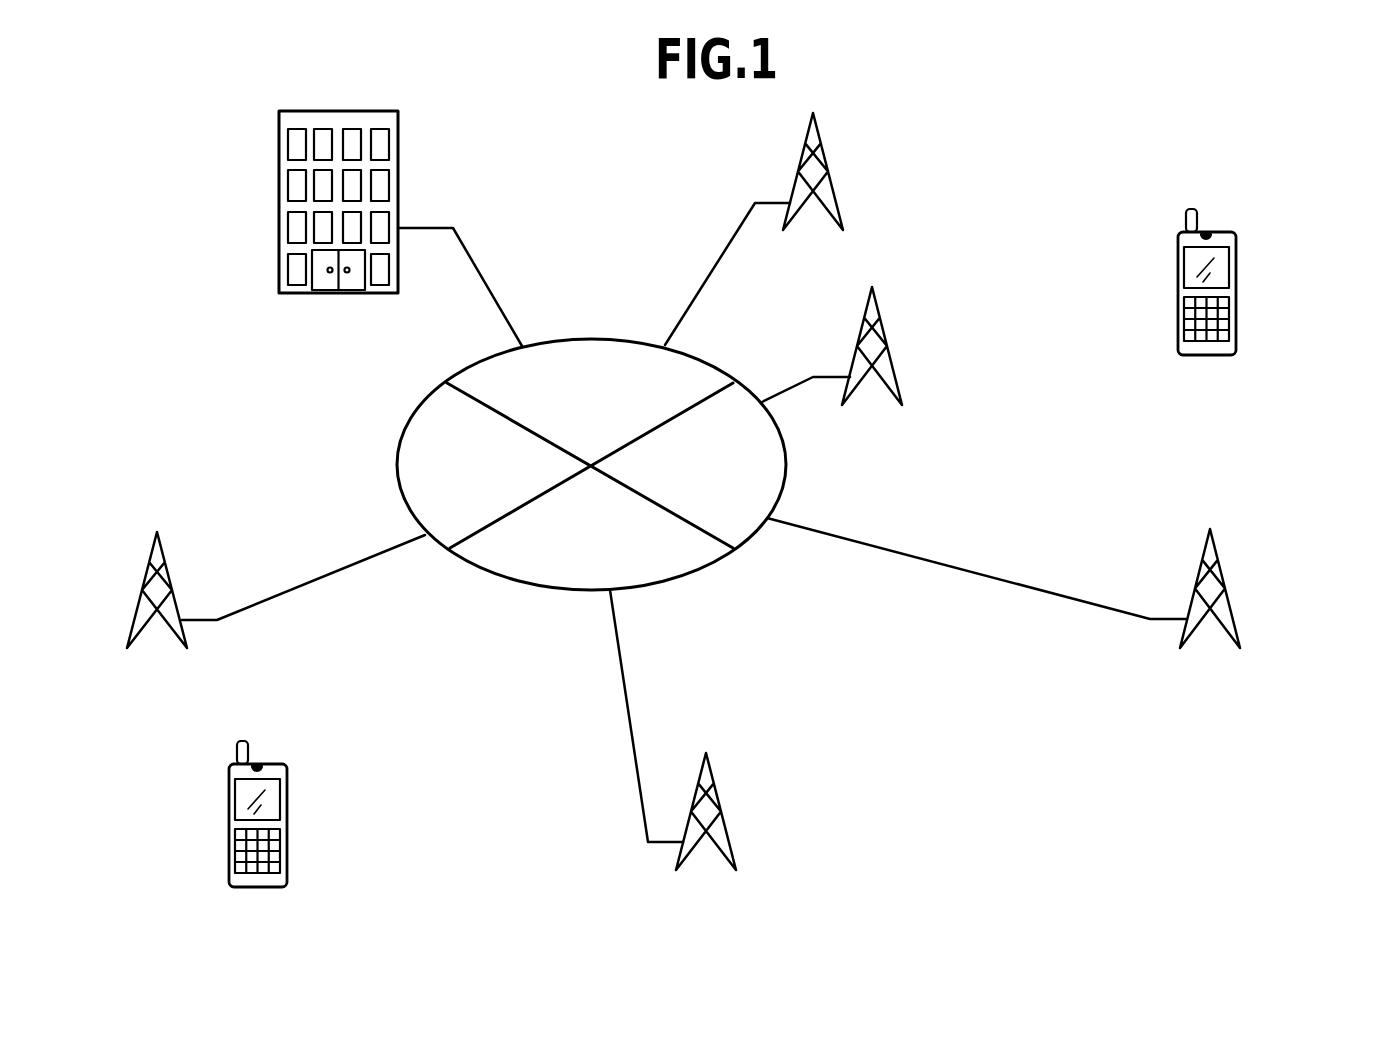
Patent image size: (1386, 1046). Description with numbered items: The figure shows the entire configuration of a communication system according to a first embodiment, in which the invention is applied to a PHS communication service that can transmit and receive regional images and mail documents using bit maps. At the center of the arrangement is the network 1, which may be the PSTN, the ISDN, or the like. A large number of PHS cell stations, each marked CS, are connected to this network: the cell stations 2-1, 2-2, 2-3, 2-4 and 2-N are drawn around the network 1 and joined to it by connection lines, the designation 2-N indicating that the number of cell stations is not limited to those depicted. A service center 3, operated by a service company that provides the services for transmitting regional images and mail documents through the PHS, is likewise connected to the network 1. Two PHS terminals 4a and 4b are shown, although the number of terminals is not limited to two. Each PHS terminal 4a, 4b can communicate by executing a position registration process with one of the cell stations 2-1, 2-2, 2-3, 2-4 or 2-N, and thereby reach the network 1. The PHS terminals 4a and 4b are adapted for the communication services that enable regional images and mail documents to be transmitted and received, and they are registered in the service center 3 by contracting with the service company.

The network 1 is at (491, 573).
The PHS cell station 2-1 is at (826, 153).
The PHS cell station 2-2 is at (884, 328).
The PHS cell station 2-3 is at (1222, 573).
The PHS cell station 2-4 is at (718, 794).
The PHS cell station 2-N is at (170, 573).
The service center 3 is at (399, 141).
The PHS terminal 4a is at (288, 793).
The PHS terminal 4b is at (1192, 356).